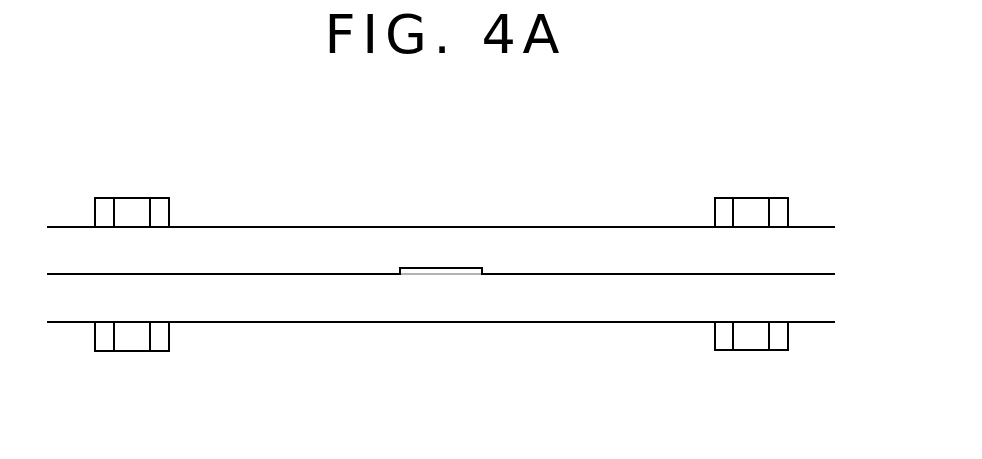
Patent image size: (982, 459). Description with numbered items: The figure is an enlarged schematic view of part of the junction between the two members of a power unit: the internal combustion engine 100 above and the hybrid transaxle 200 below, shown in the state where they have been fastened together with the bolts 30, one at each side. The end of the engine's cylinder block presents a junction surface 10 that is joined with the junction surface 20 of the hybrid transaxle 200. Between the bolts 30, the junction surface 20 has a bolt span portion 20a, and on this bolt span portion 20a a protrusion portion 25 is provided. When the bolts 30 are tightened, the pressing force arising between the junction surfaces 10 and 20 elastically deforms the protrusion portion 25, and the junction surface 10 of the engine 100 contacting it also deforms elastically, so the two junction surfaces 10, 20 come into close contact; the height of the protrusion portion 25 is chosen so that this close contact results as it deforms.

The junction surface 10 is at (350, 275).
The junction surface 20 is at (600, 276).
The bolt span portion 20a is at (391, 356).
The protrusion portion 25 is at (457, 272).
The bolt 30 is at (133, 198).
The internal combustion engine 100 is at (550, 226).
The hybrid transaxle 200 is at (525, 323).